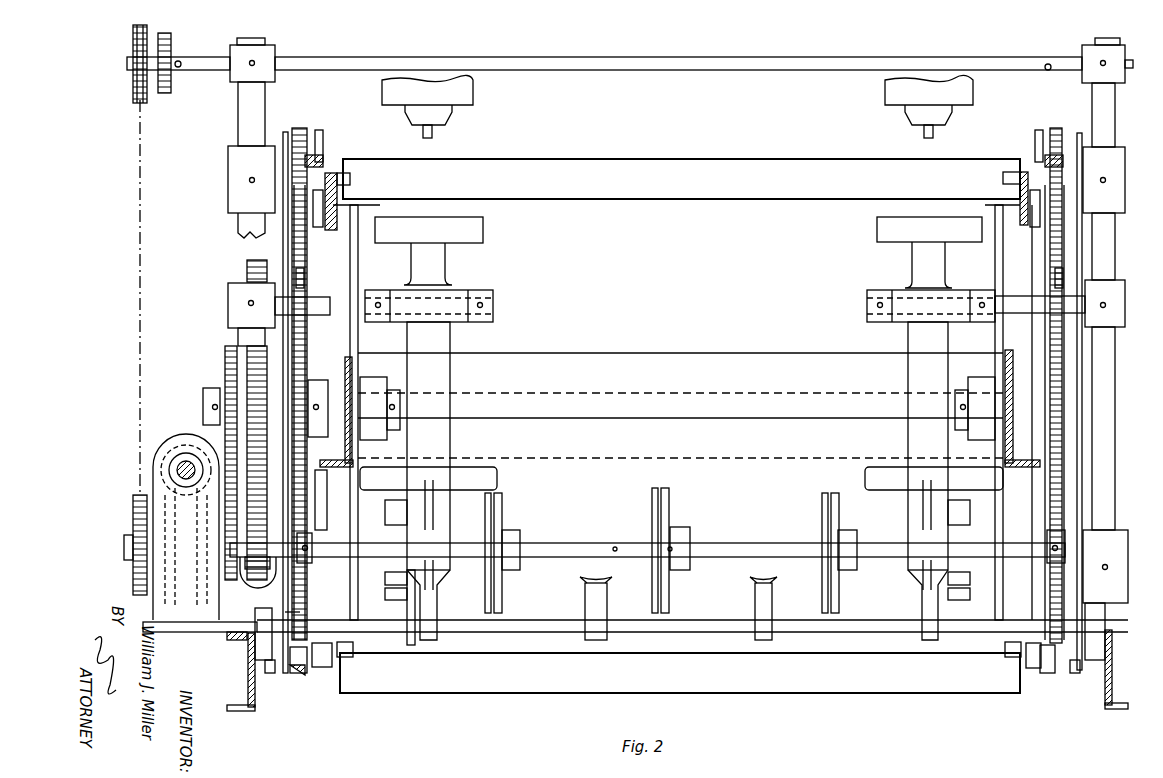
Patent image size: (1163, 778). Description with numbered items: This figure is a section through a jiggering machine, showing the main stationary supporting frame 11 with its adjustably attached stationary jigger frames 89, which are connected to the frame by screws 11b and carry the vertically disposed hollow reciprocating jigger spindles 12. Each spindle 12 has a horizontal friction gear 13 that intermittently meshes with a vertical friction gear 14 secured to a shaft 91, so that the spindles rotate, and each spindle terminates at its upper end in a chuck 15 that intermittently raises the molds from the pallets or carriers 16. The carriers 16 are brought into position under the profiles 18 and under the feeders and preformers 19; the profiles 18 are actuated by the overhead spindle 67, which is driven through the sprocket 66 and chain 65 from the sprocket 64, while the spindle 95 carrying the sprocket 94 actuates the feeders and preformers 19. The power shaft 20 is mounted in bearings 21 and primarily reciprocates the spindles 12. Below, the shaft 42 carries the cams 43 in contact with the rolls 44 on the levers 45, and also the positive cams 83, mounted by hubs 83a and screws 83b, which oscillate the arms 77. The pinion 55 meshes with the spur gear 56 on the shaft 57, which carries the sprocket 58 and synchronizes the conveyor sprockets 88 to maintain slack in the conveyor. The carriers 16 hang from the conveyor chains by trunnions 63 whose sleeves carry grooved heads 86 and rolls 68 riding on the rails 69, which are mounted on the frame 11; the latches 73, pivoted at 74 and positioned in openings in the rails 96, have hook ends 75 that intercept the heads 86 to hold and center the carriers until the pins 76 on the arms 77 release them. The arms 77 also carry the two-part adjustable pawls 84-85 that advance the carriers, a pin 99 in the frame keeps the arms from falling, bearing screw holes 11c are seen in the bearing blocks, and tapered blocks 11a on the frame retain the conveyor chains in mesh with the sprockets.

The main stationary supporting frame 11 is at (243, 108).
The tapered blocks 11a is at (305, 160).
The screws 11b is at (485, 310).
The bearing block bolt hole 11c is at (378, 310).
The jigger spindles 12 is at (445, 265).
The friction gears 13 is at (497, 476).
The friction gears 14 is at (502, 503).
The chucks 15 is at (483, 228).
The carriers 16 is at (590, 162).
The profiles 18 is at (433, 132).
The feeders and preformers 19 is at (450, 118).
The power shaft 20 is at (180, 456).
The bearings 21 is at (187, 460).
The shaft 42 is at (338, 557).
The cams 43 is at (385, 508).
The rolls 44 is at (385, 578).
The levers 45 is at (395, 600).
The pinion 55 is at (258, 575).
The spur gear 56 is at (247, 270).
The shaft 57 is at (655, 393).
The sprocket 58 is at (247, 360).
The trunnions 63 is at (300, 676).
The sprocket 64 is at (134, 508).
The chain 65 is at (140, 280).
The sprocket 66 is at (134, 86).
The overhead spindle 67 is at (127, 62).
The rolls 68 is at (320, 668).
The rails 69 is at (356, 207).
The latches 73 is at (310, 240).
The pivot bolt 74 is at (337, 197).
The hook ends 75 is at (1035, 228).
The pins 76 is at (318, 228).
The oscillating arms 77 is at (286, 132).
The positive cams 83 is at (1047, 540).
The hubs 83a is at (327, 515).
The screws 83b is at (312, 545).
The adjustable pawls 84-85 is at (323, 135).
The grooved heads 86 is at (300, 138).
The sprockets 88 is at (304, 280).
The jigger frames 89 is at (450, 436).
The shafts 91 is at (600, 543).
The sprocket 94 is at (171, 52).
The spindle 95 is at (179, 68).
The rails 96 is at (300, 245).
The pin 99 is at (300, 612).